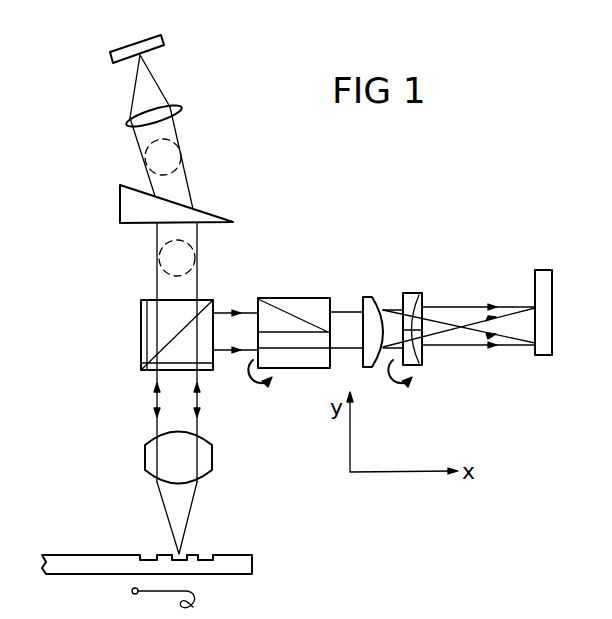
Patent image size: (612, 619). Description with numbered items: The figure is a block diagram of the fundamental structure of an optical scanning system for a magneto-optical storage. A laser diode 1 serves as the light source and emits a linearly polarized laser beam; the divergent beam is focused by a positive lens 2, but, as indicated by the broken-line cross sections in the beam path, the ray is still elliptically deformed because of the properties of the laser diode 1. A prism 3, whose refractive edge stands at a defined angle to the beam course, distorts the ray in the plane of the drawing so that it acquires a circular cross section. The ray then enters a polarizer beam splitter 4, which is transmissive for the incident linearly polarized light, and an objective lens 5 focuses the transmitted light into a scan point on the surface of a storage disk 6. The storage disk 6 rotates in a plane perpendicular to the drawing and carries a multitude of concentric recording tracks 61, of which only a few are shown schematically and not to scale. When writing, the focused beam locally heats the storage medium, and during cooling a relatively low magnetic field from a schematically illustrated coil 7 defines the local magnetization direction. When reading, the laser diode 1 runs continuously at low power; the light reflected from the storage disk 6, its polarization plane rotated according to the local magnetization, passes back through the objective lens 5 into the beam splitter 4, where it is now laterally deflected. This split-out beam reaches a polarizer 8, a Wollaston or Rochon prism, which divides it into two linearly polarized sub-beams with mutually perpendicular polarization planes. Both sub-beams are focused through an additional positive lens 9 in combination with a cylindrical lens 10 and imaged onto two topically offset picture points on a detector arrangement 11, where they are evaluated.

The laser diode 1 is at (165, 46).
The positive lens 2 is at (183, 113).
The prism 3 is at (213, 212).
The polarizer beam splitter 4 is at (141, 331).
The objective lens 5 is at (147, 460).
The storage disk 6 is at (92, 553).
The concentric recording tracks 61 is at (201, 553).
The coil 7 is at (203, 609).
The polarizer 8 is at (294, 298).
The additional positive lens 9 is at (372, 297).
The cylindrical lens 10 is at (430, 268).
The detector arrangement 11 is at (535, 283).